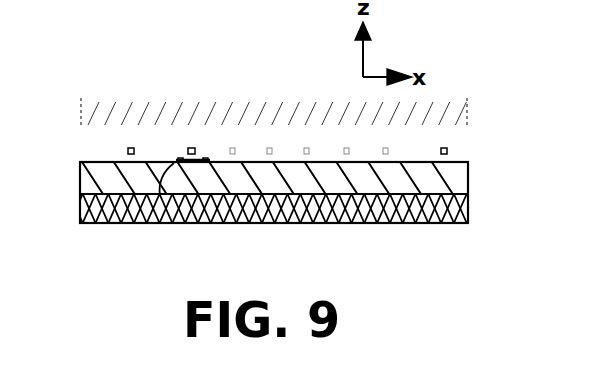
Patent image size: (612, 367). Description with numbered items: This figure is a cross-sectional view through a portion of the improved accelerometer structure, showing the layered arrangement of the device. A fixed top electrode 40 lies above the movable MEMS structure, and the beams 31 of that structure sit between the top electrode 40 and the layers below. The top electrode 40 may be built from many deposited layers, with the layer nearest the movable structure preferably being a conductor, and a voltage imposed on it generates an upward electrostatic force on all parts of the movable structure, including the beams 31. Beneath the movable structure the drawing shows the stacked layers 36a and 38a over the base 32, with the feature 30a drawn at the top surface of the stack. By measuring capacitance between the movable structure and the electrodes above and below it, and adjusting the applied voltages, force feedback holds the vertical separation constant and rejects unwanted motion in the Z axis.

The mask opening / pattern feature 30a is at (192, 148).
The beams 31 is at (127, 151).
The substrate 32 is at (430, 223).
The mesh layer 36a is at (213, 224).
The hatched layer 38a is at (177, 223).
The top electrode 40 is at (446, 100).